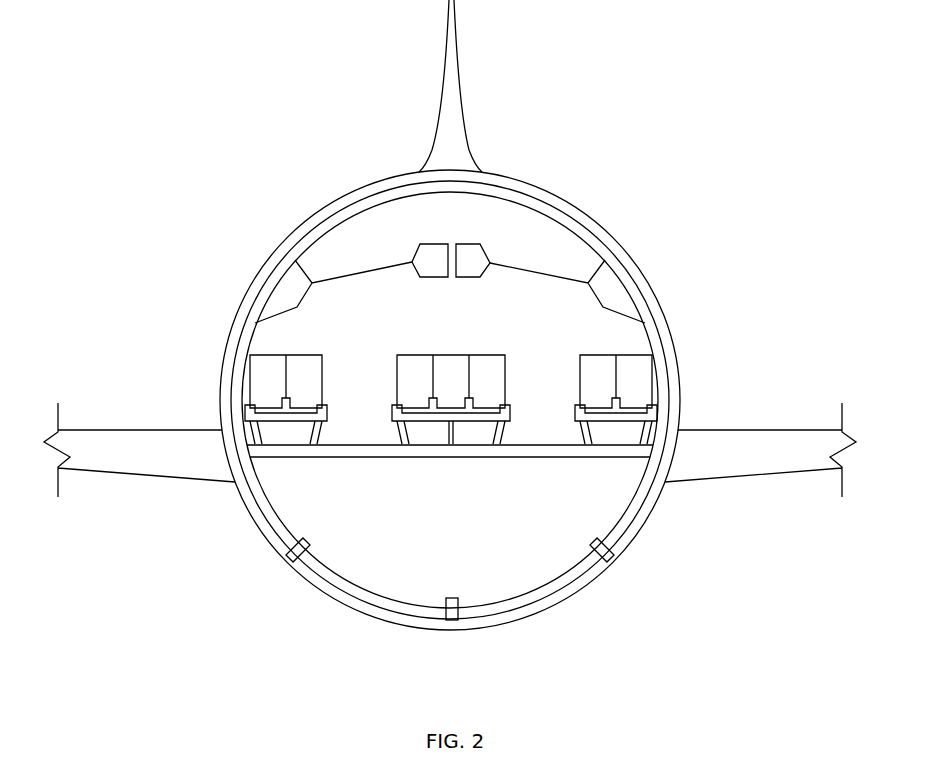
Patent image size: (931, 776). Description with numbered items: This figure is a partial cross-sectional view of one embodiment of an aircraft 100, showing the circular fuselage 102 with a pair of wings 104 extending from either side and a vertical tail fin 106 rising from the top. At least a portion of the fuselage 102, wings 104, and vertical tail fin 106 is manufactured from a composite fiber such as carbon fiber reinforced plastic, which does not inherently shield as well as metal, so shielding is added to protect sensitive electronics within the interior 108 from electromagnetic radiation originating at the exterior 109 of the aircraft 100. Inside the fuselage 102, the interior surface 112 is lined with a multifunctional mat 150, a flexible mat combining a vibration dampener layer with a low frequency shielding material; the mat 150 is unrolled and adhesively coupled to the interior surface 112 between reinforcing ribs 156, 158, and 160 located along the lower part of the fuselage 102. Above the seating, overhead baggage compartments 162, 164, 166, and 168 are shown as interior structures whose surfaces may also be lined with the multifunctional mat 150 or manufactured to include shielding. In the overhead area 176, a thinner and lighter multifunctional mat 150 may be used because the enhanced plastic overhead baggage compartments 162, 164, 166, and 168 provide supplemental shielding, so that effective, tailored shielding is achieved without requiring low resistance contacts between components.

The aircraft 100 is at (616, 143).
The fuselage 102 is at (673, 330).
The wings 104 is at (137, 430).
The vertical tail fin 106 is at (458, 36).
The interior 108 is at (363, 232).
The exterior 109 is at (222, 242).
The interior surface 112 is at (557, 592).
The multifunctional mat 150 is at (372, 593).
The reinforcing rib 156 is at (309, 534).
The reinforcing rib 158 is at (452, 597).
The reinforcing rib 160 is at (591, 534).
The overhead baggage compartment 162 is at (303, 305).
The overhead baggage compartment 164 is at (432, 278).
The overhead baggage compartment 166 is at (468, 278).
The overhead baggage compartment 168 is at (600, 308).
The overhead area 176 is at (490, 222).